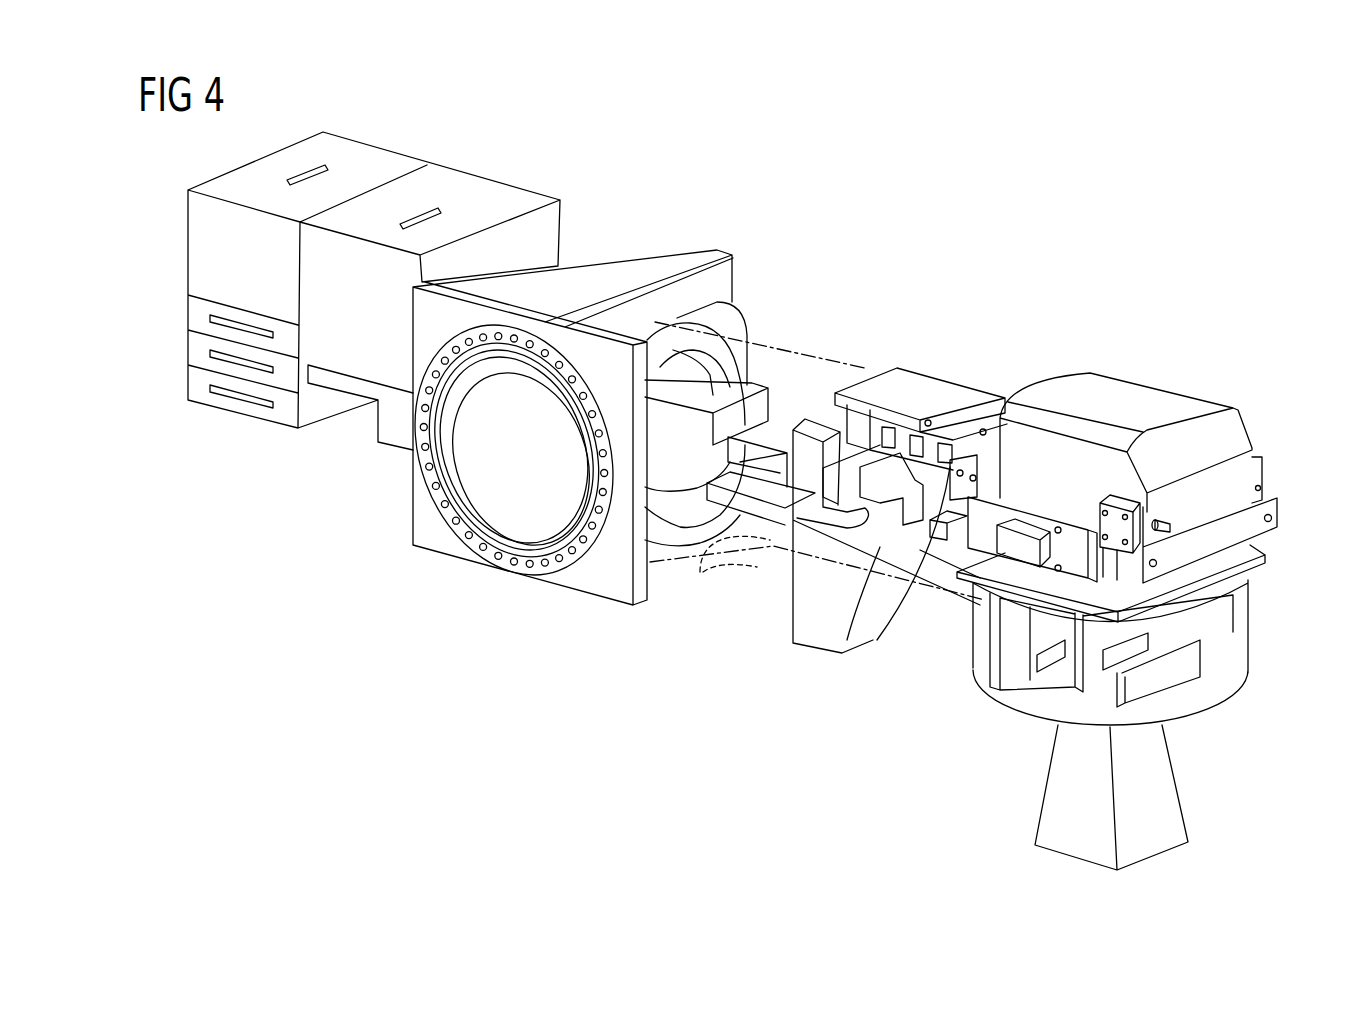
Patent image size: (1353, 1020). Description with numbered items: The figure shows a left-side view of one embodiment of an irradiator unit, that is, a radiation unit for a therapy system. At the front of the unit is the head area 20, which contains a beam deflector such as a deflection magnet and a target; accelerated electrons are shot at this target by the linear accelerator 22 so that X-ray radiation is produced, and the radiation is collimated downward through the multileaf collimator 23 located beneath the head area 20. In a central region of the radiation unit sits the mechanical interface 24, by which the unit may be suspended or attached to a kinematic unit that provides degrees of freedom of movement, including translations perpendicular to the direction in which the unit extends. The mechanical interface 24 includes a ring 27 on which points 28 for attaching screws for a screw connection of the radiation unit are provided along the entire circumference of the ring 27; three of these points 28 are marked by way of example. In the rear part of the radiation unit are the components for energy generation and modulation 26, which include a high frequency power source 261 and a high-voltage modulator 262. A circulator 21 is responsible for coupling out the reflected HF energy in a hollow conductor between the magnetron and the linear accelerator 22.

The head area 20 is at (1090, 460).
The circulator 21 is at (800, 477).
The linear accelerator 22 is at (913, 385).
The multileaf collimator 23 is at (1202, 625).
The mechanical interface 24 is at (478, 455).
The components for energy generation and modulation 26 is at (312, 282).
The high frequency (HF) power source 261 is at (358, 155).
The high-voltage modulator 262 is at (458, 183).
The ring 27 is at (487, 524).
The points for attaching screws 28 is at (506, 570).